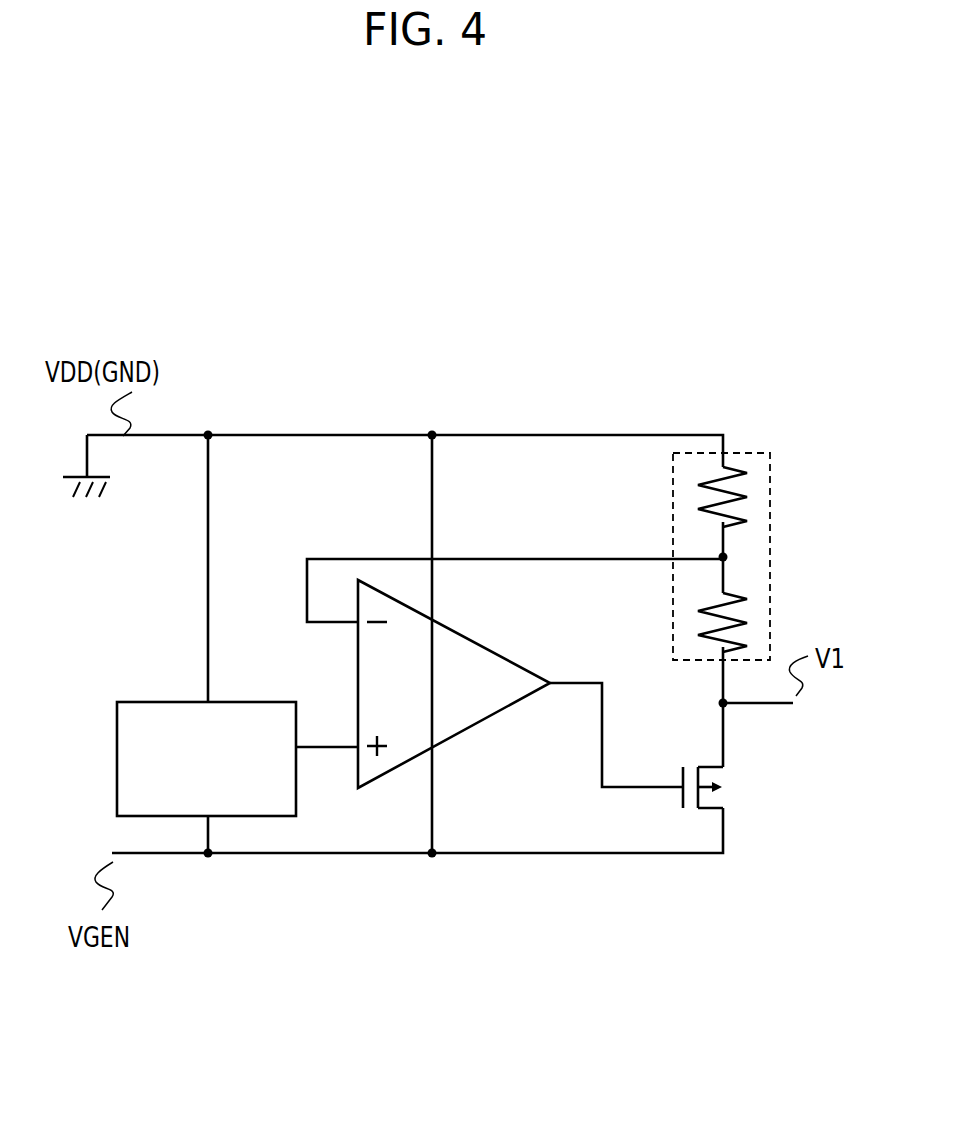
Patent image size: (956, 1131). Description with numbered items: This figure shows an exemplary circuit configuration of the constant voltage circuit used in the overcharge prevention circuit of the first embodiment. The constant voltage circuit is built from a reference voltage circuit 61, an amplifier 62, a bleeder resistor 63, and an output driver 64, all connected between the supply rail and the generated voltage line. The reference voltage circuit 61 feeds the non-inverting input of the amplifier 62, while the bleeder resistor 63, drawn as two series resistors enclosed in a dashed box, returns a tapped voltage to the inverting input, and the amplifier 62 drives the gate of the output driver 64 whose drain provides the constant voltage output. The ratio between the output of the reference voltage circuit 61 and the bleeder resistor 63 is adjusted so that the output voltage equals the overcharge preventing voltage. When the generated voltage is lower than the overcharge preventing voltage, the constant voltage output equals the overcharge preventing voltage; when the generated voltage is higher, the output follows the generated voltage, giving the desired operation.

The reference voltage circuit 61 is at (250, 702).
The amplifier 62 is at (486, 664).
The bleeder resistor 63 is at (766, 531).
The output driver 64 is at (734, 800).